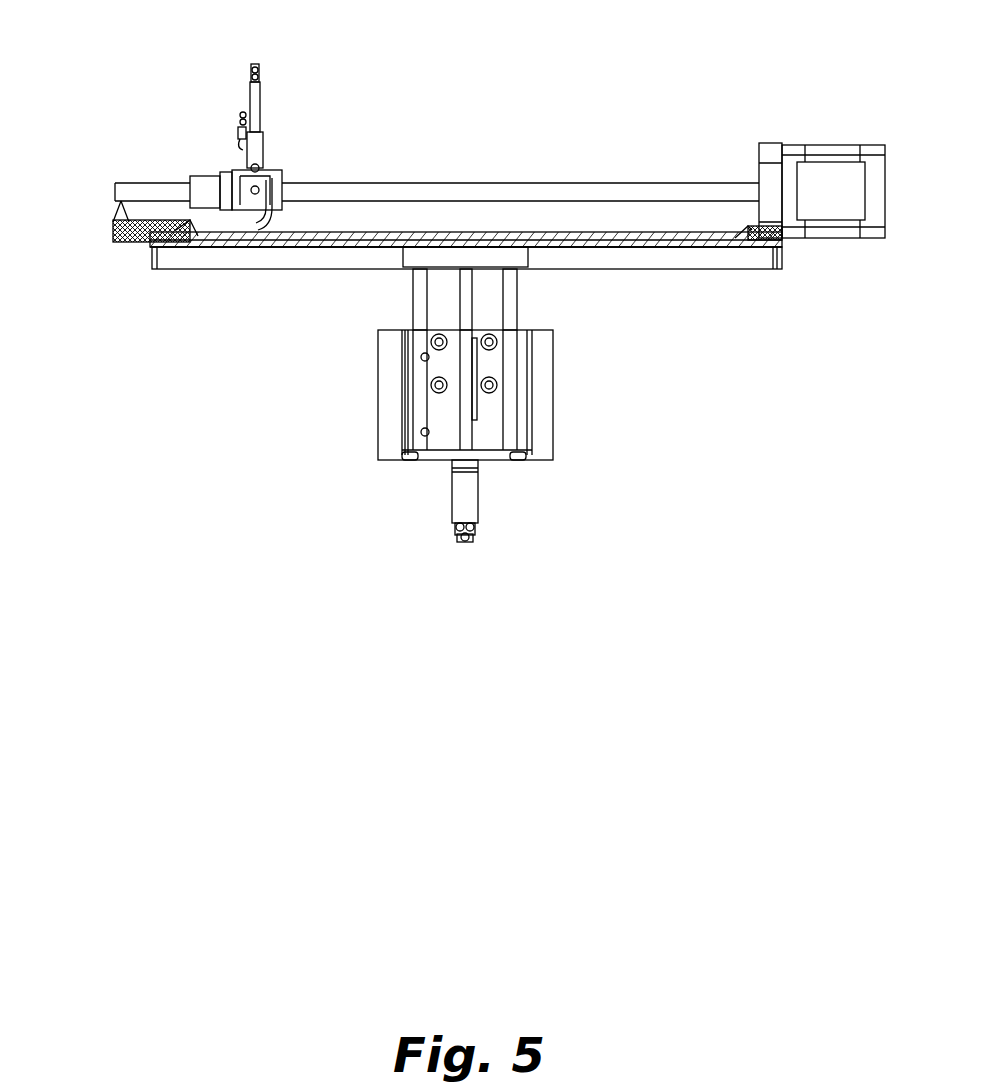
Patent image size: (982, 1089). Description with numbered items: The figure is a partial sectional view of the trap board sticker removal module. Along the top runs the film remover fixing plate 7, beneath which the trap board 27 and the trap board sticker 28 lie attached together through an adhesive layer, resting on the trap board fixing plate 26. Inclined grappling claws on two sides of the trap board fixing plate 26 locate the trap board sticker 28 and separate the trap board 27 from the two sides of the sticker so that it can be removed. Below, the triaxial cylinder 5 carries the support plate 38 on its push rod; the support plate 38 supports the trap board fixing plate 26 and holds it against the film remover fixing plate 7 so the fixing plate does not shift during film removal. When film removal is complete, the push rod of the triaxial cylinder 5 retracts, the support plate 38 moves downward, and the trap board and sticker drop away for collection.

The film remover fixing plate 7 is at (124, 205).
The trap board 27 is at (190, 224).
The trap board sticker 28 is at (152, 248).
The trap board fixing plate 26 is at (230, 247).
The support plate 38 is at (357, 258).
The triaxial cylinder 5 is at (395, 340).